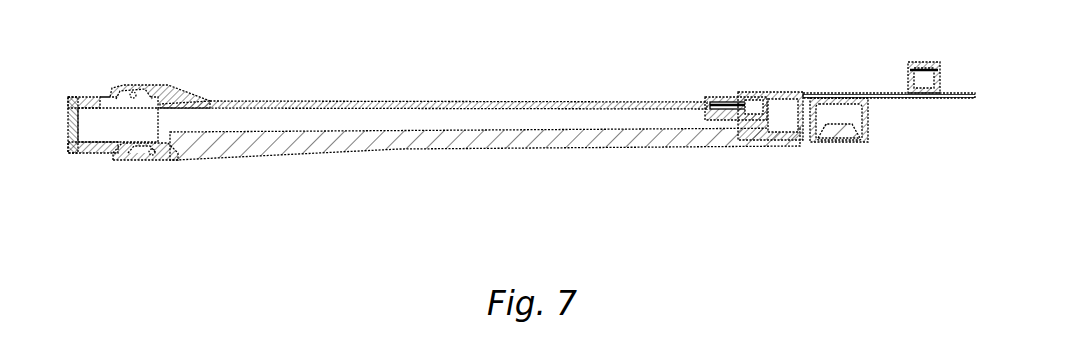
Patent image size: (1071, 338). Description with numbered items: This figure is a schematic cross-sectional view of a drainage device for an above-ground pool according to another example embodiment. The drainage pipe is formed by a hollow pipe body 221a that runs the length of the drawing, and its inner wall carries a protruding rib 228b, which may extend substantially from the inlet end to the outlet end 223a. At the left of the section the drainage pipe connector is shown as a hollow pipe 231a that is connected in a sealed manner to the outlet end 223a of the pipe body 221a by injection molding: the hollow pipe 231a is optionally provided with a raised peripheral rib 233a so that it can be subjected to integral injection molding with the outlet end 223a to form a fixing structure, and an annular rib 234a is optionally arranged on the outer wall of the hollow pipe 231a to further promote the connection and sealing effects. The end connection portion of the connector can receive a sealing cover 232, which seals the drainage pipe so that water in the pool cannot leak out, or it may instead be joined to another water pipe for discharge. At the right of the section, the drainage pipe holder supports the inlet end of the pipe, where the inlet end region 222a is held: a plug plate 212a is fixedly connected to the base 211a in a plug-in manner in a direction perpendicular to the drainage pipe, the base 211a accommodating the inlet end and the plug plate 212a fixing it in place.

The sealing cover 232 is at (74, 104).
The annular rib 234a is at (133, 98).
The outlet end 223a is at (140, 95).
The pipe body 221a is at (342, 104).
The protruding rib 228b is at (455, 130).
The raised peripheral rib 233a is at (112, 152).
The hollow pipe 231a is at (140, 144).
The plug plate 212a is at (705, 108).
The block 222a is at (783, 103).
The base 211a is at (865, 127).